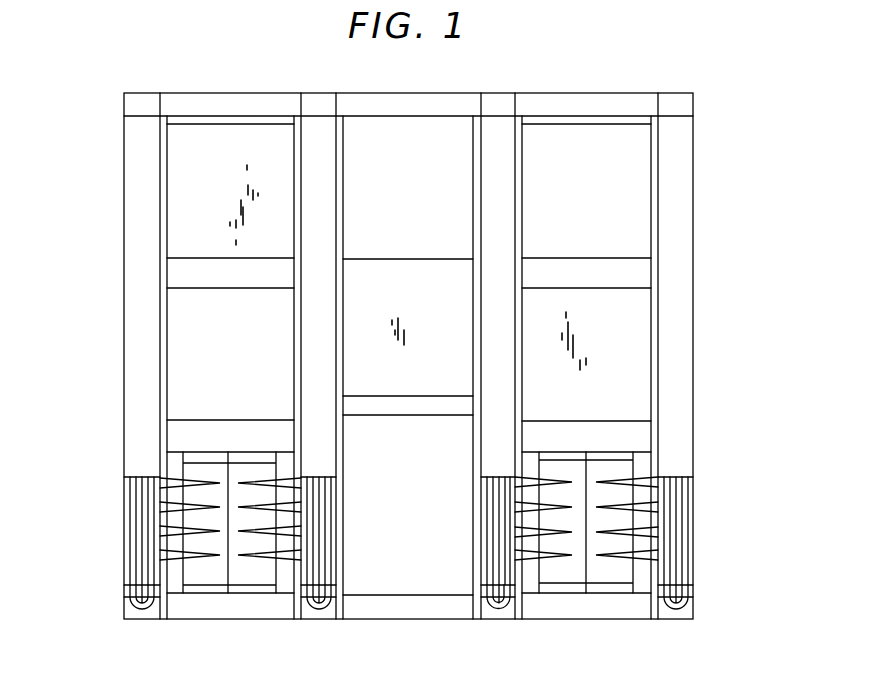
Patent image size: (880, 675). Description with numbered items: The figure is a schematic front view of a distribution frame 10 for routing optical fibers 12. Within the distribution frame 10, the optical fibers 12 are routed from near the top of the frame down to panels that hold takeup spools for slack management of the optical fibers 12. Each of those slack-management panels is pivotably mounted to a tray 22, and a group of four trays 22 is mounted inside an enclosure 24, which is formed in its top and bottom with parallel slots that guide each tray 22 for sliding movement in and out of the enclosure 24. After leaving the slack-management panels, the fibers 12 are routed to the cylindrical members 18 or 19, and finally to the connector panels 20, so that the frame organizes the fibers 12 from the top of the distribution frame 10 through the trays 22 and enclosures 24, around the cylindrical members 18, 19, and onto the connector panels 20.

The distribution frame 10 is at (742, 348).
The optical fibers 12 is at (136, 619).
The cylindrical member 18 is at (156, 485).
The cylindrical member 19 is at (325, 473).
The connector panel 20 is at (250, 575).
The tray 22 is at (153, 548).
The enclosure 24 is at (158, 474).